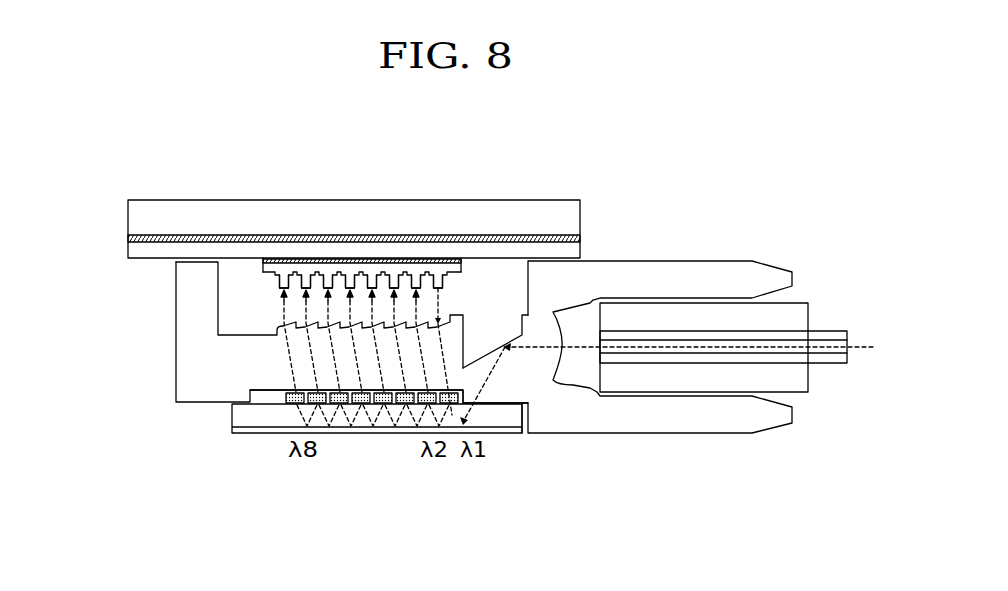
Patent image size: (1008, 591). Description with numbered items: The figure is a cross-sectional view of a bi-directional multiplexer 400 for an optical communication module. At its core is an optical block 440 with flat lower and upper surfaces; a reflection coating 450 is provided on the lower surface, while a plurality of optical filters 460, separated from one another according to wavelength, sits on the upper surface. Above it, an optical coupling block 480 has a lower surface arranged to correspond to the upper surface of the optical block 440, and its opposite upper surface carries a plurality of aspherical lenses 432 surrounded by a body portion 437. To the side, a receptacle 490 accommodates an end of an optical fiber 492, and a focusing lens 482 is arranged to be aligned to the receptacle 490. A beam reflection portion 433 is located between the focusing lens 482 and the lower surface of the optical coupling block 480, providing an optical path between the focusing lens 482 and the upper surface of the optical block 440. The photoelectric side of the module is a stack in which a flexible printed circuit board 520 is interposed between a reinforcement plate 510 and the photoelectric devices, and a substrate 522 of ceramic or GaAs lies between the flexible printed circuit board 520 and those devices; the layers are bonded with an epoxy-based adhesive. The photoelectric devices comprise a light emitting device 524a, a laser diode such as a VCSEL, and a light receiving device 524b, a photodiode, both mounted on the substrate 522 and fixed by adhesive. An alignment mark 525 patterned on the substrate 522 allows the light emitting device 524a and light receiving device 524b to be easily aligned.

The multiplexer 400 is at (313, 486).
The aspherical lenses 432 is at (280, 323).
The beam reflection portion 433 is at (507, 342).
The body portion 437 is at (176, 340).
The optical block 440 is at (232, 417).
The reflection coating 450 is at (493, 432).
The optical filters 460 is at (293, 404).
The optical coupling block 480 is at (622, 478).
The focusing lens 482 is at (563, 333).
The receptacle 490 is at (772, 303).
The optical fiber 492 is at (830, 331).
The reinforcement plate 510 is at (128, 217).
The flexible printed circuit board 520 is at (128, 246).
The substrate 522 is at (262, 268).
The light emitting device 524a is at (441, 282).
The light receiving device 524b is at (374, 288).
The alignment mark 525 is at (445, 284).